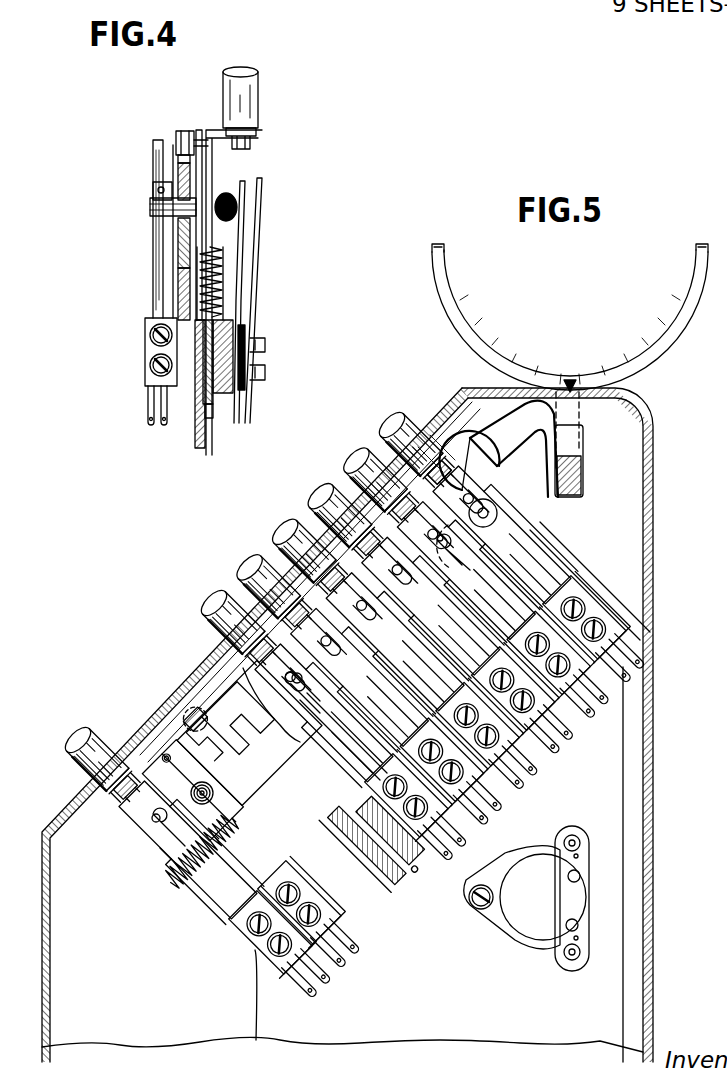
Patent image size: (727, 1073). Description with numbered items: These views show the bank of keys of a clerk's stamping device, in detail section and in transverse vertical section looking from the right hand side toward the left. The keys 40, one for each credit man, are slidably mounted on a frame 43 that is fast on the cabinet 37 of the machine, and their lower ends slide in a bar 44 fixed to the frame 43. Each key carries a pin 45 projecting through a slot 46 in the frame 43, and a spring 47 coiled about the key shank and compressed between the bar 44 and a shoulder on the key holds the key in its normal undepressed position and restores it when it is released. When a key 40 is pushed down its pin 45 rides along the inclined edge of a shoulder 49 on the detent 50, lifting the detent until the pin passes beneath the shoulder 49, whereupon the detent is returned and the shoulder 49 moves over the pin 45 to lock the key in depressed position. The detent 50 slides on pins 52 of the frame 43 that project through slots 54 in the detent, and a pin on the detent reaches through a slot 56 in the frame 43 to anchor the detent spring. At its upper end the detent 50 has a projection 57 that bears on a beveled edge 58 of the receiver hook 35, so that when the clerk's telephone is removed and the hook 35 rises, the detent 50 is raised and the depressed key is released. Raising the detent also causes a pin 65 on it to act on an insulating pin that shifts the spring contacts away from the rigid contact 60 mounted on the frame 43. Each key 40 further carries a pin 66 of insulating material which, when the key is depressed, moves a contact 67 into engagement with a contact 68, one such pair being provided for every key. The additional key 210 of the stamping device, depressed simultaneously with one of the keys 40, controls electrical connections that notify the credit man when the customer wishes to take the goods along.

In FIG. 5, the receiver hook 35 is at (676, 352).
In FIG. 5, the cabinet 37 is at (652, 526).
In FIG. 4, the keys 40 is at (258, 98).
In FIG. 5, the keys 40 is at (290, 517).
In FIG. 4, the frame 43 is at (196, 438).
In FIG. 5, the frame 43 is at (535, 533).
In FIG. 4, the bar 44 is at (226, 398).
In FIG. 5, the bar 44 is at (395, 866).
In FIG. 4, the pins 45 is at (207, 140).
In FIG. 5, the pins 45 is at (450, 465).
In FIG. 4, the slots 46 is at (178, 181).
In FIG. 5, the slots 46 is at (212, 672).
In FIG. 4, the springs 47 is at (222, 285).
In FIG. 5, the springs 47 is at (256, 842).
In FIG. 5, the shoulder 49 is at (290, 745).
In FIG. 4, the detent 50 is at (196, 162).
In FIG. 5, the detent 50 is at (268, 770).
In FIG. 5, the pins 52 is at (488, 508).
In FIG. 5, the slots 54 is at (476, 548).
In FIG. 4, the slot 56 is at (178, 230).
In FIG. 5, the projection 57 is at (583, 447).
In FIG. 5, the beveled edge 58 is at (583, 482).
In FIG. 4, the rigid contact 60 is at (154, 262).
In FIG. 4, the pin 65 is at (150, 210).
In FIG. 4, the pin of insulating material 66 is at (230, 195).
In FIG. 5, the pin of insulating material 66 is at (292, 680).
In FIG. 4, the contact 67 is at (247, 220).
In FIG. 4, the contact 68 is at (263, 194).
In FIG. 5, the contact 68 is at (338, 722).
In FIG. 5, the key 210 is at (92, 735).